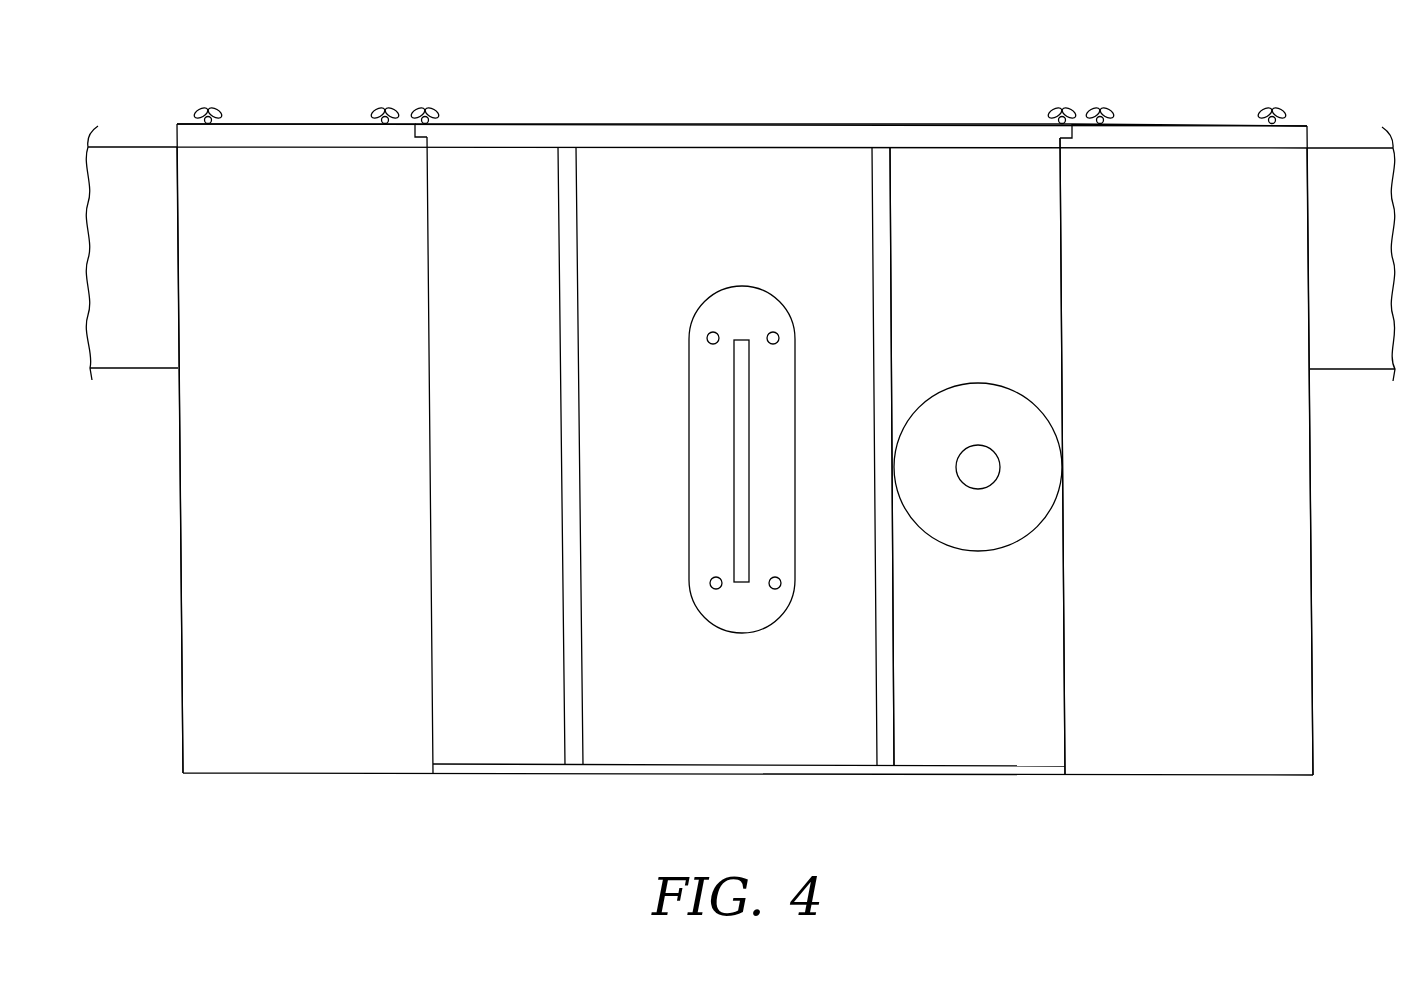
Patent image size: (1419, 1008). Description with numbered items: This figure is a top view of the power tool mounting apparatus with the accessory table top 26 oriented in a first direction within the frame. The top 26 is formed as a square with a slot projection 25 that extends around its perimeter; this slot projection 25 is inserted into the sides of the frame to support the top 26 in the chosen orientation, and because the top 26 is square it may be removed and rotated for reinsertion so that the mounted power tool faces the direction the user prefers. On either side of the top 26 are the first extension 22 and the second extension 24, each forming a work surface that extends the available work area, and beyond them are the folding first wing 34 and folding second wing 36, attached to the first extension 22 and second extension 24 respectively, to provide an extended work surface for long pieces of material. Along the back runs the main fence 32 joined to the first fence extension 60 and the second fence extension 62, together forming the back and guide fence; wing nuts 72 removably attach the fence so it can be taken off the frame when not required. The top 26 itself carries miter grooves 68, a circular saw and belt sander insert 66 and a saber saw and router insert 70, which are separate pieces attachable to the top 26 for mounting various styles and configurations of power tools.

The first extension 22 is at (1177, 765).
The second extension 24 is at (345, 763).
The slot projection 25 is at (972, 772).
The accessory table top 26 is at (967, 160).
The main fence 32 is at (832, 122).
The folding first wing 34 is at (1340, 148).
The folding second wing 36 is at (129, 147).
The first fence extension 60 is at (1192, 124).
The second fence extension 62 is at (306, 122).
The circular saw and belt sander insert 66 is at (772, 620).
The miter groove 68 is at (563, 757).
The saber saw and router insert 70 is at (1049, 511).
The wing nut 72 is at (382, 110).